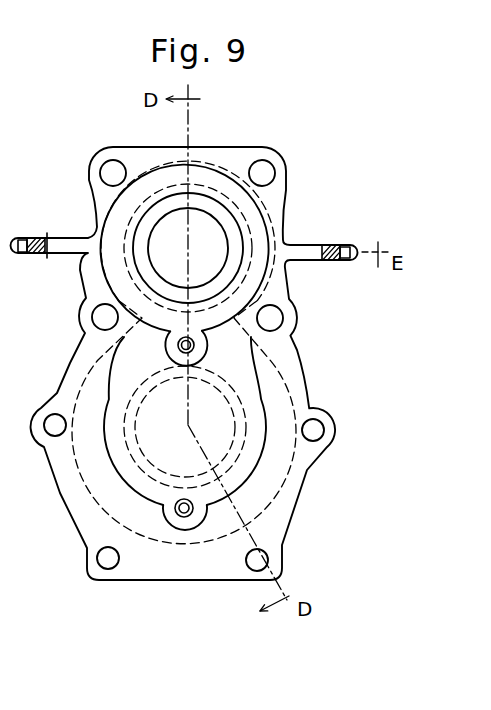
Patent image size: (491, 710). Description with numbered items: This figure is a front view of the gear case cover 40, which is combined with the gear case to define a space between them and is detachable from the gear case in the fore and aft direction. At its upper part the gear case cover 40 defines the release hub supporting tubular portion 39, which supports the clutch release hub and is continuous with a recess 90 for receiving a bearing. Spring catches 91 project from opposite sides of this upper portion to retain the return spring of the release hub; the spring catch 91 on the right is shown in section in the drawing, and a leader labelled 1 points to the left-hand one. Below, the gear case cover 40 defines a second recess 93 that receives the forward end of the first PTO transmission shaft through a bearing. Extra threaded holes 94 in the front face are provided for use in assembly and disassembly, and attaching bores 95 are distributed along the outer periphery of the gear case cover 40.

The pump housing / shaft arm 1 is at (26, 262).
The tubular support portion 39 is at (138, 259).
The gear case cover 40 is at (60, 495).
The recess 90 is at (222, 192).
The spring catches 91 is at (345, 262).
The recess 93 is at (140, 436).
The extra threaded holes 94 is at (184, 517).
The attaching bores 95 is at (265, 173).